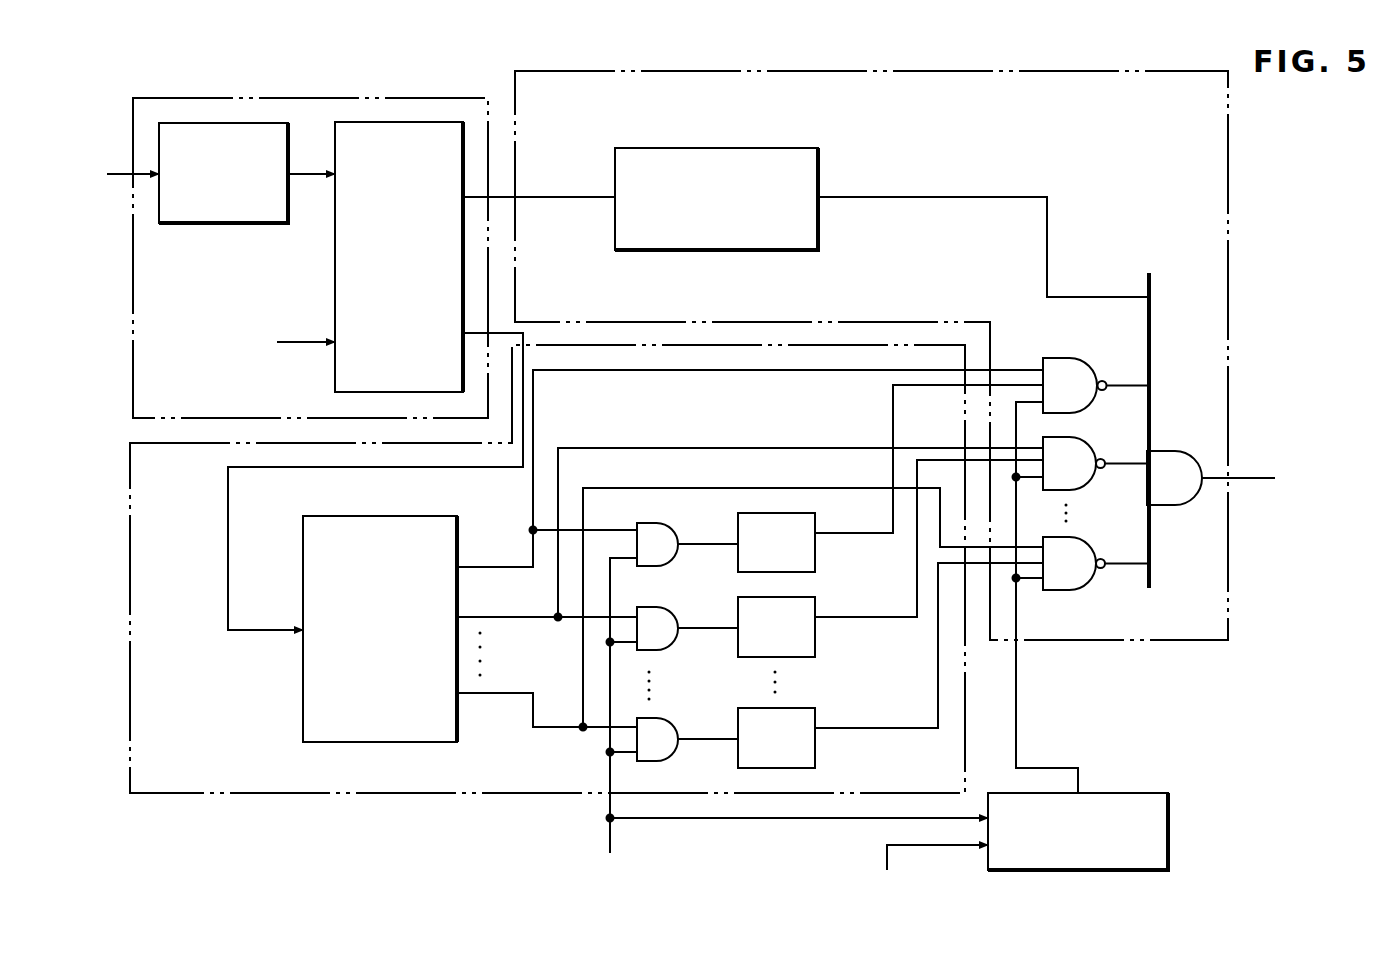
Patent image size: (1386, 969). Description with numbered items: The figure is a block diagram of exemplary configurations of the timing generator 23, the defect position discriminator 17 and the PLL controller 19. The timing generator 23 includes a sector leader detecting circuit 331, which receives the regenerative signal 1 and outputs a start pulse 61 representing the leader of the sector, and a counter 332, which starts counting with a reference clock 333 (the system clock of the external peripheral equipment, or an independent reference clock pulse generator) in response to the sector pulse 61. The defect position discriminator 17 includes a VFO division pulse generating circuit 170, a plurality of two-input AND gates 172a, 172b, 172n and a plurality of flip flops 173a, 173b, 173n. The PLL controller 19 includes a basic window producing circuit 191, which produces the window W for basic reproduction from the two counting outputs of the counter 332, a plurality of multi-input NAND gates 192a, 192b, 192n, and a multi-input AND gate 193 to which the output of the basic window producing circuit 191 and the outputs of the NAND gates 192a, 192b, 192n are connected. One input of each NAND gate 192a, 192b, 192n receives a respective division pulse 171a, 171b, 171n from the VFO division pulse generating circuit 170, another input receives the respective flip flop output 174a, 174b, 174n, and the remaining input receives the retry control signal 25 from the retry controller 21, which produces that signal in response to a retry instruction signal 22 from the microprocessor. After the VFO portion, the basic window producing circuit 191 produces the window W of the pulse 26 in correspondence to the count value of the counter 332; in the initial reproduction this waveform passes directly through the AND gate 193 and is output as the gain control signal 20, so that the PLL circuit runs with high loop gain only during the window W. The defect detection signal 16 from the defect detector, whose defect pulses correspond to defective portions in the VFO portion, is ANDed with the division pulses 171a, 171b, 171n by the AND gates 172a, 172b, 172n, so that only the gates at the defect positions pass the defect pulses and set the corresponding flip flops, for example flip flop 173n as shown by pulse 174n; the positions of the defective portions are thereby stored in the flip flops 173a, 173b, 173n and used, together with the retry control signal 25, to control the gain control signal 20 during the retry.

The regenerative signal 1 is at (118, 165).
The timing generator 23 is at (302, 97).
The sector leader detecting circuit 331 is at (190, 224).
The start pulse 61 is at (301, 170).
The counter 332 is at (335, 270).
The reference clock input 333 is at (285, 344).
The basic window producing circuit 191 is at (714, 147).
The basic window pulse 26 is at (895, 196).
The PLL controller 19 is at (1228, 598).
The defect position discriminator 17 is at (195, 797).
The VFO division pulse generating circuit 170 is at (303, 697).
The division pulse line a 171a is at (490, 566).
The division pulse line b 171b is at (525, 620).
The division pulse line n 171n is at (497, 695).
The two-input AND gate 172a is at (667, 530).
The two-input AND gate 172b is at (668, 621).
The two-input AND gate 172n is at (665, 725).
The flip flop 173a is at (817, 574).
The flip flop 173b is at (816, 640).
The flip flop 173n is at (816, 752).
The flip-flop output line a 174a is at (893, 408).
The flip-flop output line b 174b is at (940, 458).
The flip flop output pulse 174n is at (938, 684).
The multi-input NAND gate 192a is at (1068, 358).
The multi-input NAND gate 192b is at (1090, 490).
The multi-input NAND gate 192n is at (1070, 591).
The multi-input AND gate 193 is at (1172, 450).
The gain control signal 20 is at (1253, 475).
The retry control signal 25 is at (1018, 668).
The retry controller 21 is at (1170, 833).
The retry instruction signal 22 is at (887, 858).
The defect detection signal 16 is at (600, 841).